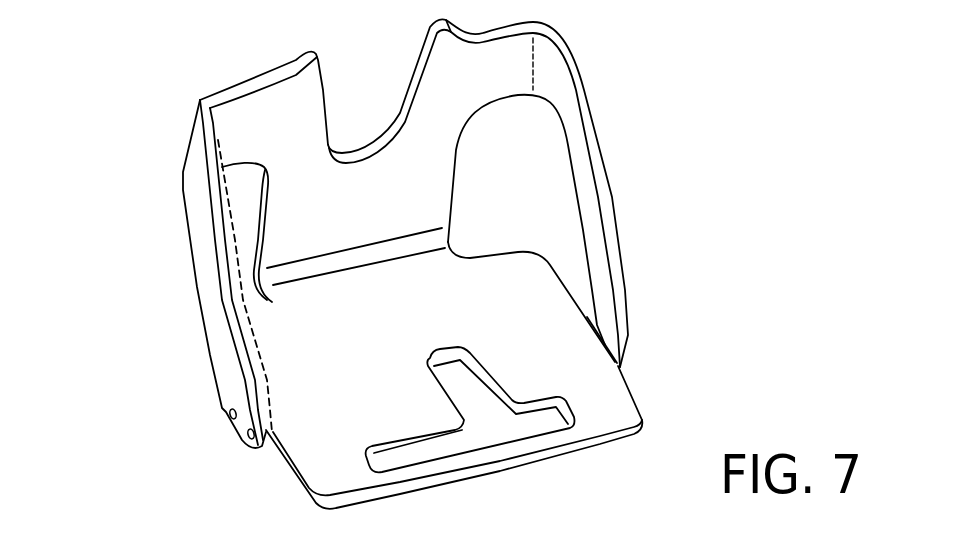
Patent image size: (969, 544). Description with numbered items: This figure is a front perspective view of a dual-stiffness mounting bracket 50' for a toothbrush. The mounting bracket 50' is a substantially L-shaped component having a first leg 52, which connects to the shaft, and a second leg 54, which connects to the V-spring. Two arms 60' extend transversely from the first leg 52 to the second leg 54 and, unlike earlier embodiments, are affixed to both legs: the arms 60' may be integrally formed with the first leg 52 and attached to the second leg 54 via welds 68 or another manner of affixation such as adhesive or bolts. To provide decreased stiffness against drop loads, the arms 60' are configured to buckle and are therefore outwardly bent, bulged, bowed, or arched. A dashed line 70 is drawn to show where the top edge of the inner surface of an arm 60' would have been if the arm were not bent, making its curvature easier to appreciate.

The mounting bracket 50' is at (351, 264).
The first leg 52 is at (252, 114).
The second leg 54 is at (317, 474).
The arms 60' is at (371, 271).
The welds 68 is at (250, 437).
The dashed line 70 is at (258, 348).